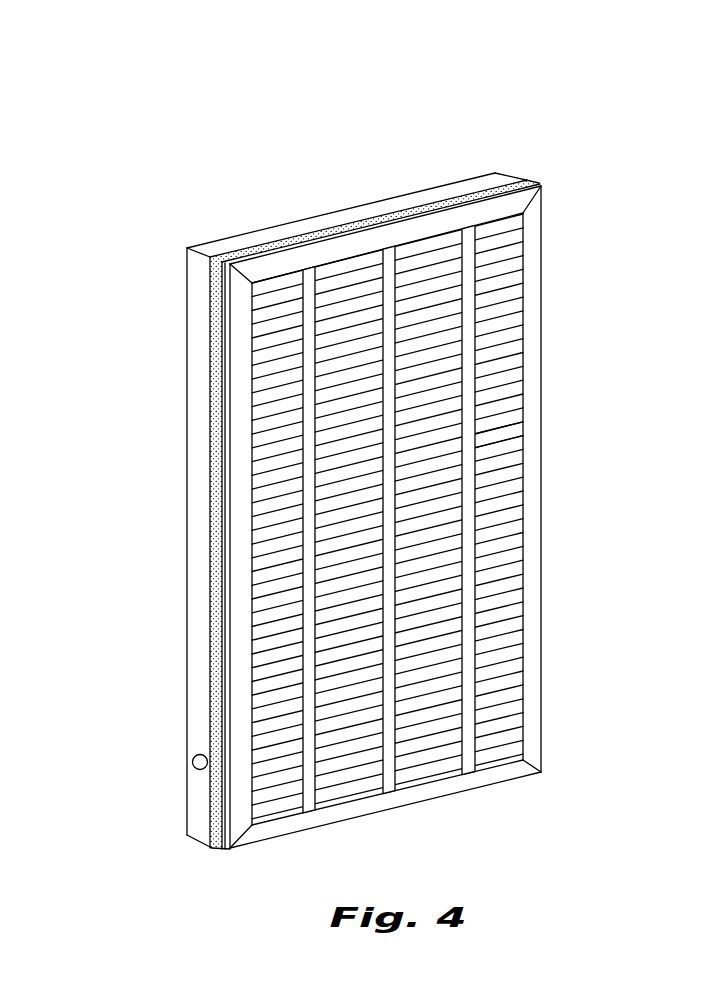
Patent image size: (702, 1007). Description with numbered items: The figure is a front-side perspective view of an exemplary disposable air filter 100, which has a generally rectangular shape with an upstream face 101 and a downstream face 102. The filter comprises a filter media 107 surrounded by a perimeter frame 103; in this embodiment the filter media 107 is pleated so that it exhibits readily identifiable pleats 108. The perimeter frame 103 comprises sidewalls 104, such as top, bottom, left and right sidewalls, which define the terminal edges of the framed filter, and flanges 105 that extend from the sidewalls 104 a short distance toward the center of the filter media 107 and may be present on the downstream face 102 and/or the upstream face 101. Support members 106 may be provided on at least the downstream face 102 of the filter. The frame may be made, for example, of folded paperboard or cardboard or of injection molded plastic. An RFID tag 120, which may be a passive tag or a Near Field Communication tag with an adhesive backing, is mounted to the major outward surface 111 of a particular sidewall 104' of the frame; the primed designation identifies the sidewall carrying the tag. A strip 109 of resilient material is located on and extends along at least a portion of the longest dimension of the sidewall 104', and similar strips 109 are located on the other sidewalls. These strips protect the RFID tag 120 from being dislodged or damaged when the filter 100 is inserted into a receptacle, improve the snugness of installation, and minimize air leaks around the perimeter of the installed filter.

The disposable air filter 100 is at (537, 134).
The upstream face 101 is at (512, 699).
The downstream face 102 is at (165, 418).
The perimeter frame 103 is at (390, 205).
The sidewall 104 is at (385, 205).
The sidewall to which RFID tag is attached 104' is at (328, 677).
The flange 105 is at (530, 510).
The support member 106 is at (468, 765).
The filter media 107 is at (515, 438).
The pleats 108 is at (495, 397).
The strip of resilient material 109 is at (282, 243).
The major outward surface 111 is at (195, 607).
The RFID tag 120 is at (198, 763).